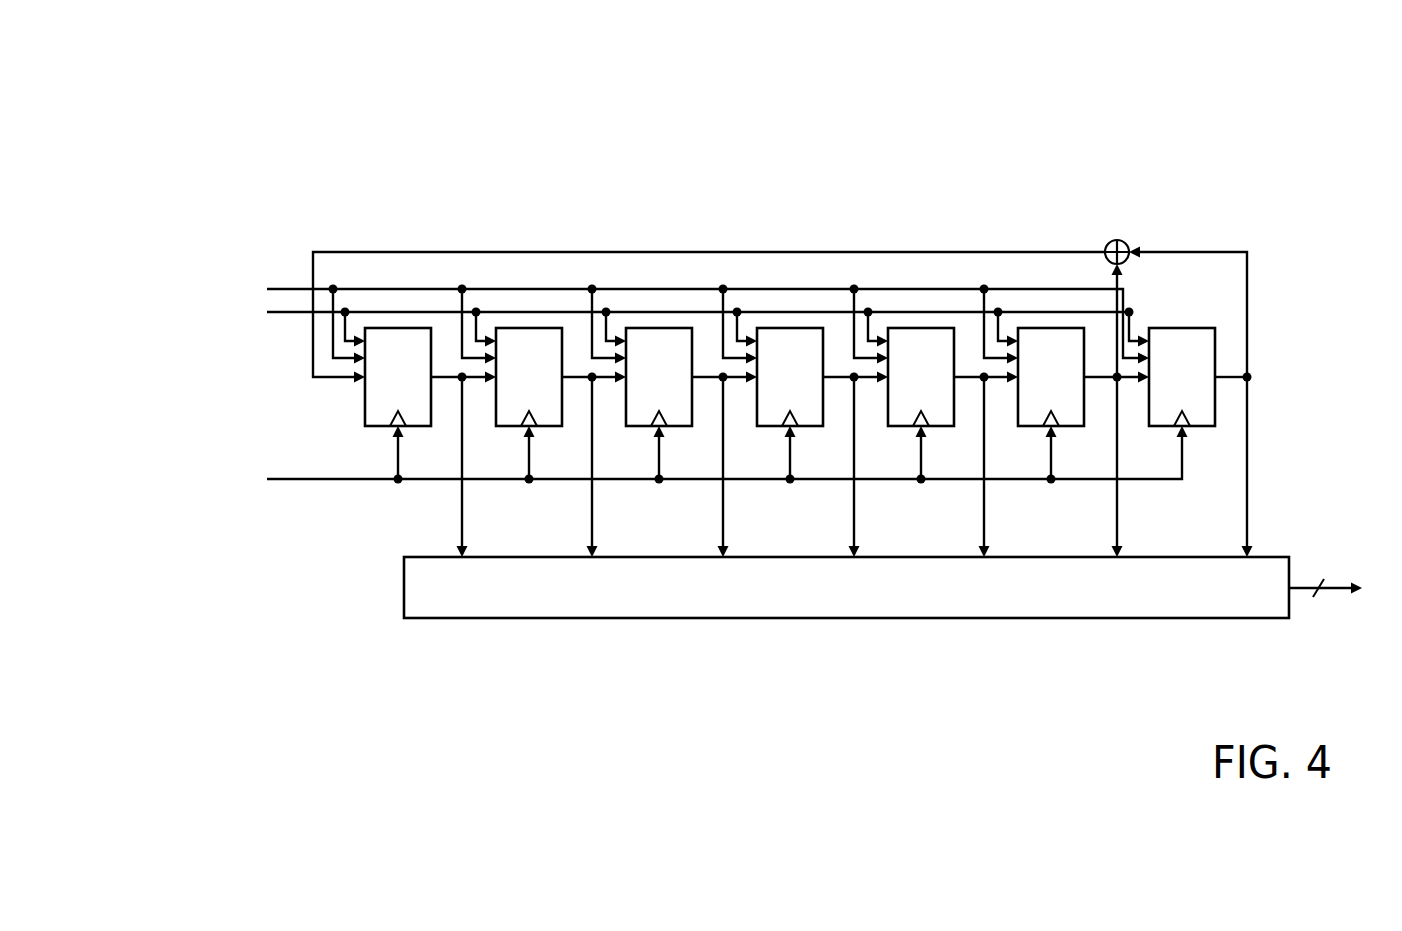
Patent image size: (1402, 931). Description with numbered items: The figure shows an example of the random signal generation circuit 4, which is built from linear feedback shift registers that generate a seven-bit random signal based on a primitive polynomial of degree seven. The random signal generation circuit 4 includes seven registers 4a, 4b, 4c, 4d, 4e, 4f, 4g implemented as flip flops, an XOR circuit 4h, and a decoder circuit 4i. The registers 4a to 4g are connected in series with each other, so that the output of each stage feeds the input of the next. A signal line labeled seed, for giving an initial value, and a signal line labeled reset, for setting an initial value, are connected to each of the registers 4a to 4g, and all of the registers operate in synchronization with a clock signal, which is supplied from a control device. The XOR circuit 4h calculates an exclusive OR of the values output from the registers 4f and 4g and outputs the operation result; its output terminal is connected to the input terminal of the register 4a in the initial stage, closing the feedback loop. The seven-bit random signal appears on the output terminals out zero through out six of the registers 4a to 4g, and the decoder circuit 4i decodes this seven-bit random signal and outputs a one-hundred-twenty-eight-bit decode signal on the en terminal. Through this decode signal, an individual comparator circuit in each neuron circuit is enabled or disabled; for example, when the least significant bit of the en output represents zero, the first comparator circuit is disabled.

The random signal generation circuit 4 is at (354, 80).
The register 4a is at (365, 411).
The register 4b is at (513, 427).
The register 4c is at (643, 427).
The register 4d is at (774, 427).
The register 4e is at (905, 427).
The register 4f is at (1035, 427).
The register 4g is at (1166, 427).
The XOR circuit 4h is at (1125, 242).
The decoder circuit 4i is at (404, 588).